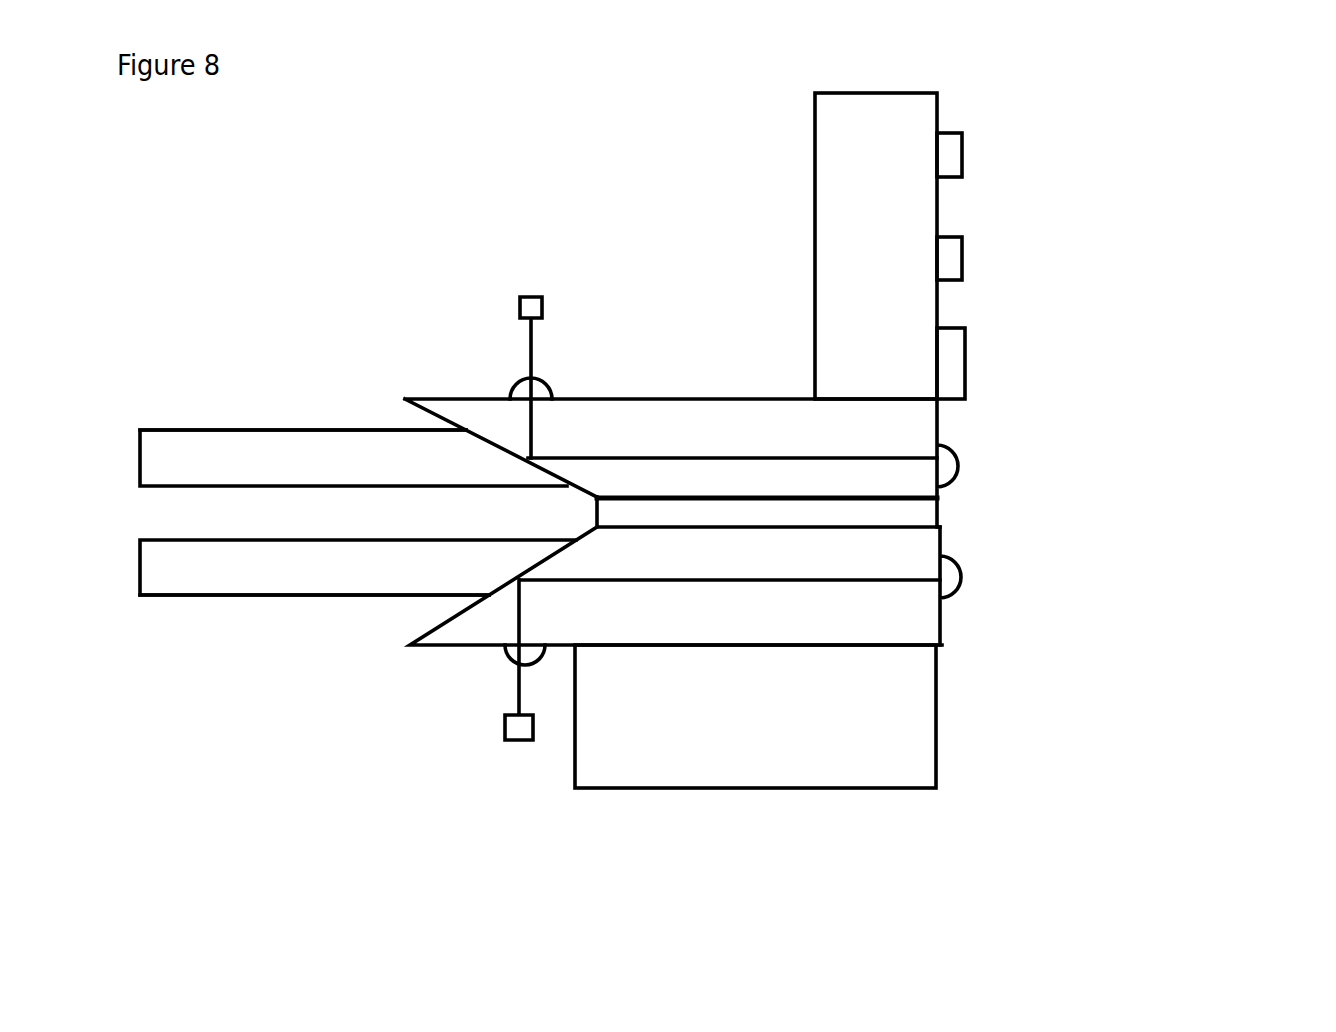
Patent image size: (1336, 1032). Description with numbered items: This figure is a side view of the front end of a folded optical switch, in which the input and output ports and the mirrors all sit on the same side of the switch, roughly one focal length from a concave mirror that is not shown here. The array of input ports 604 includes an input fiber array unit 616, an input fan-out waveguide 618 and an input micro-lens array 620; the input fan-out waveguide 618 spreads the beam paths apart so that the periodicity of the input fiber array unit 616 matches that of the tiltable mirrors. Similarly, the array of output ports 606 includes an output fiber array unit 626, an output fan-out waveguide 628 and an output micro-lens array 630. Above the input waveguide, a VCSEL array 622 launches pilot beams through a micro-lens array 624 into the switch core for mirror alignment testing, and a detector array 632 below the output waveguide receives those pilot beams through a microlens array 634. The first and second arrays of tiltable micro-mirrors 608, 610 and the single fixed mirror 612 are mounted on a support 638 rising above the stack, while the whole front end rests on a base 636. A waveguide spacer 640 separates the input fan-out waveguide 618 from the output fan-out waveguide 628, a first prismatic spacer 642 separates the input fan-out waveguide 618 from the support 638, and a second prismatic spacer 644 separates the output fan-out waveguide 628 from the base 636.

The array of input ports 604 is at (158, 419).
The array of output ports 606 is at (161, 608).
The first array of tiltable micro-mirrors 608 is at (962, 255).
The second array of tiltable micro-mirrors 610 is at (962, 147).
The fixed mirror 612 is at (965, 348).
The input fiber array unit 616 is at (288, 430).
The input fan-out waveguide 618 is at (743, 485).
The input micro-lens array 620 is at (957, 453).
The VCSEL array 622 is at (528, 295).
The micro-lens array 624 is at (512, 387).
The output fiber array unit 626 is at (275, 597).
The output fan-out waveguide 628 is at (920, 540).
The output micro-lens array 630 is at (963, 582).
The detector array 632 is at (520, 740).
The microlens array 634 is at (500, 665).
The base 636 is at (920, 743).
The support 638 is at (838, 147).
The waveguide spacer 640 is at (920, 512).
The first prismatic spacer 642 is at (785, 418).
The second prismatic spacer 644 is at (933, 622).